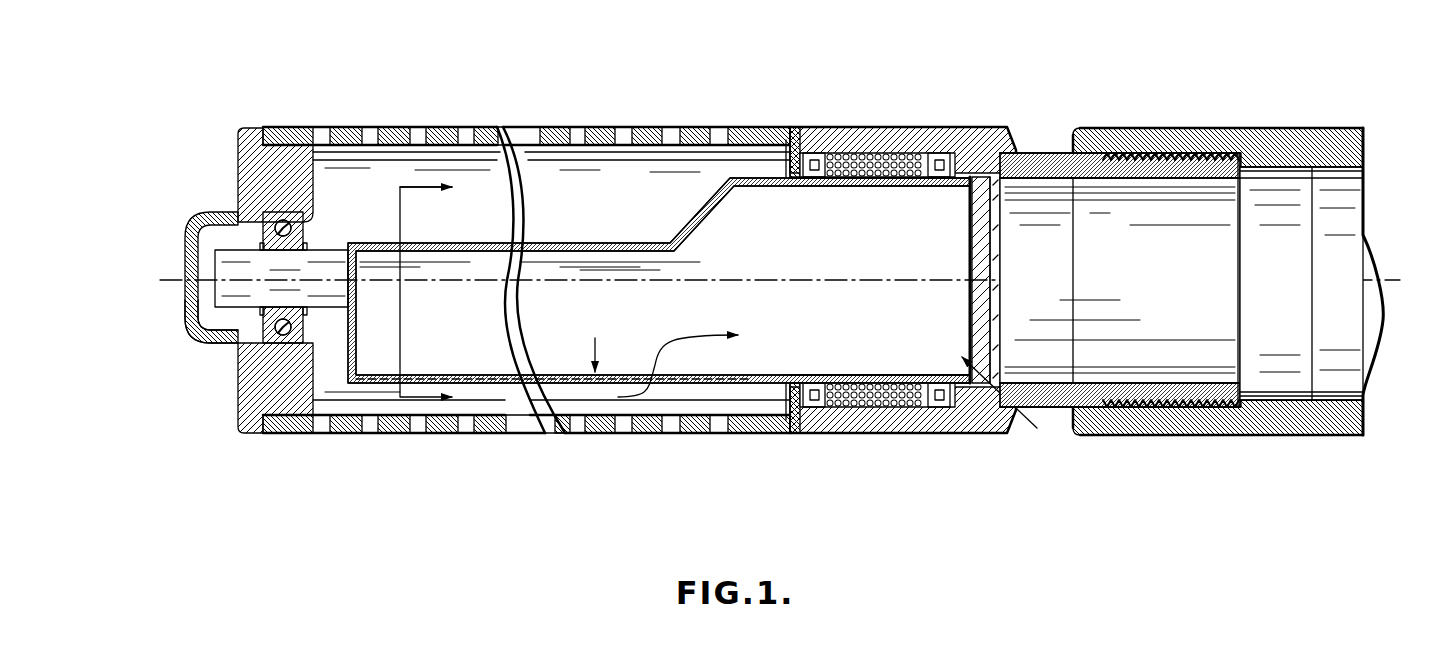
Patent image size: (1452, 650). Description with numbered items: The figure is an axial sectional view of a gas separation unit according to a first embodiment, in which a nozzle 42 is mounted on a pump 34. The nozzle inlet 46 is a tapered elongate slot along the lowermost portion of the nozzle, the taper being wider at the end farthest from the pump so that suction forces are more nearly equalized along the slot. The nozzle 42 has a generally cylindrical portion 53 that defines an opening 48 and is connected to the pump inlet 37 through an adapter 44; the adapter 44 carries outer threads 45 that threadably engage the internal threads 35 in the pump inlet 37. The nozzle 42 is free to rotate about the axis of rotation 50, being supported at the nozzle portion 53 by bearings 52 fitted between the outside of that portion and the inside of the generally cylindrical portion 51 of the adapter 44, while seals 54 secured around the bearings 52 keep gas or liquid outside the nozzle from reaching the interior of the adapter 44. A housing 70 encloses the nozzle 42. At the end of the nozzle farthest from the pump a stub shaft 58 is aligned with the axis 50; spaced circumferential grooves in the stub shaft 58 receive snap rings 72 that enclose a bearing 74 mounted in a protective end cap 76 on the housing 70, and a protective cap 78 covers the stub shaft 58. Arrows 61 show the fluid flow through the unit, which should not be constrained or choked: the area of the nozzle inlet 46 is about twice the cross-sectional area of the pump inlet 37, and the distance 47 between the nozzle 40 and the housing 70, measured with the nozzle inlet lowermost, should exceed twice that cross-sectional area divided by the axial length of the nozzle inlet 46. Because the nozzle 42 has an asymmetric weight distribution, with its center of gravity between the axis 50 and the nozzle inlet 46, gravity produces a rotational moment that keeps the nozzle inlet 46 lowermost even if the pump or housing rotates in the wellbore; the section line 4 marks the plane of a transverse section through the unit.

The pump 34 is at (1347, 222).
The internal threads 35 is at (1153, 153).
The pump inlet 37 is at (1228, 438).
The nozzle 40 is at (763, 382).
The nozzle 42 is at (482, 385).
The adapter 44 is at (992, 395).
The outer threads 45 is at (1140, 408).
The nozzle inlet 46 is at (703, 382).
The distance 47 is at (593, 377).
The opening 48 is at (1015, 405).
The axis of rotation 50 is at (165, 279).
The generally cylindrical portion of the adapter 51 is at (845, 126).
The bearings 52 is at (893, 155).
The generally cylindrical portion of the nozzle 53 is at (890, 188).
The seals 54 is at (813, 152).
The stub shaft 58 is at (200, 330).
The arrows 61 is at (921, 306).
The housing 70 is at (277, 434).
The snap rings 72 is at (262, 318).
The bearing 74 is at (278, 220).
The protective end cap 76 is at (236, 186).
The protective cap 78 is at (184, 292).
The section line 4- 4 is at (437, 292).